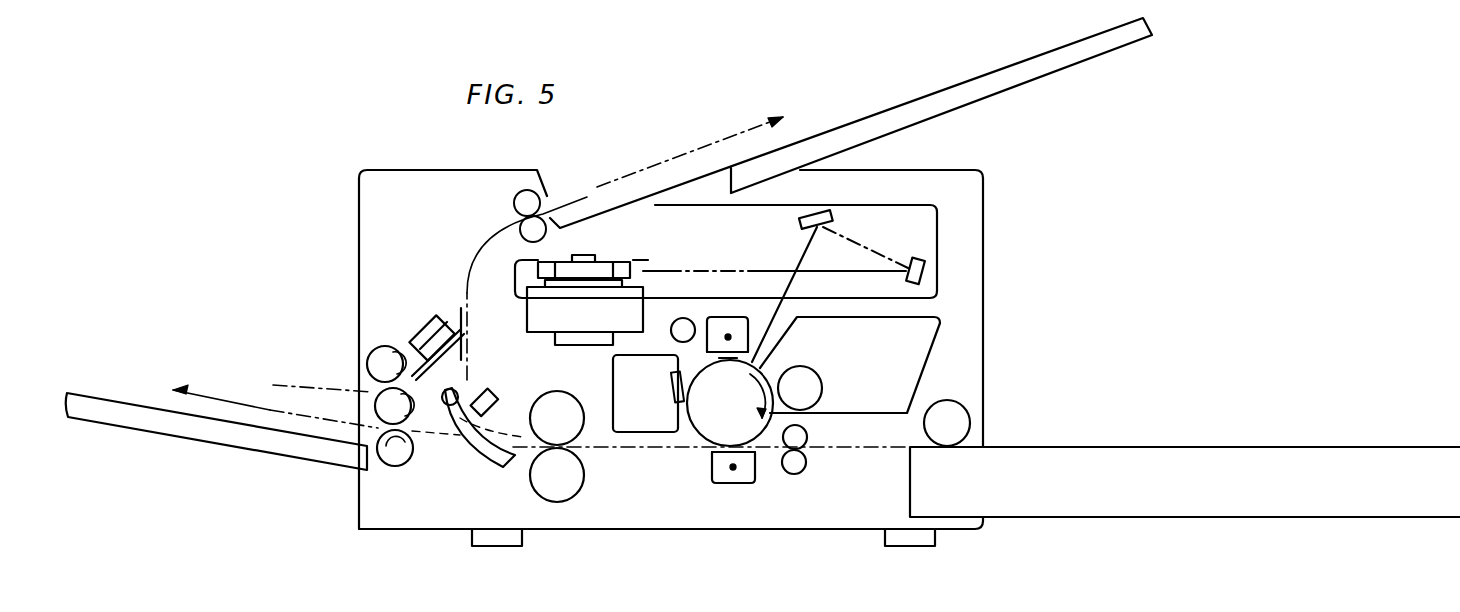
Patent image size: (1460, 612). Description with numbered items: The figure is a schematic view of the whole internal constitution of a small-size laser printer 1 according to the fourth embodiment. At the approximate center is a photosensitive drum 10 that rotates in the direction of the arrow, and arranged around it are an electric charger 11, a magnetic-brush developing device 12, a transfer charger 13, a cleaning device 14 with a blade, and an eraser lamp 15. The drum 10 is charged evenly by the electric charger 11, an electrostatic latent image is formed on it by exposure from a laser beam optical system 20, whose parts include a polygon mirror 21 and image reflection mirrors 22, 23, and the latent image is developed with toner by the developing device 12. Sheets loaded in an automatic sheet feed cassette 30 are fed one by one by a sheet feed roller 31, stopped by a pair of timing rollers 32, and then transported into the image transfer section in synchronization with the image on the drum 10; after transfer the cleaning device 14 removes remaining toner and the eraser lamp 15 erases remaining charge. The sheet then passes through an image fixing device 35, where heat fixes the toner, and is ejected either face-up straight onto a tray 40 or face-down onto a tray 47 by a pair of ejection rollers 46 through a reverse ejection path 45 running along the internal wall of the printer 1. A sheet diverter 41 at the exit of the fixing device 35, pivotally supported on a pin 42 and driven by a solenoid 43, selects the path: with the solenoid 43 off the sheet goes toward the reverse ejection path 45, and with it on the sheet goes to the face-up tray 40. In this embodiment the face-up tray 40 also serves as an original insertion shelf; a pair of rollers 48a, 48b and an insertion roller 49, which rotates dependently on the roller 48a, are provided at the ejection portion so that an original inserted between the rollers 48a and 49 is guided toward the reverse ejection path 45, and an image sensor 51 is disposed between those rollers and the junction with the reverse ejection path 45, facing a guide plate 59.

The printer 1 is at (998, 307).
The photosensitive drum 10 is at (693, 442).
The electric charger 11 is at (728, 333).
The developing device 12 is at (928, 340).
The transfer charger 13 is at (732, 483).
The cleaning device 14 is at (637, 423).
The eraser lamp 15 is at (685, 318).
The laser beam optical system 20 is at (926, 229).
The polygon mirror 21 is at (600, 268).
The image reflection mirror 22 is at (927, 270).
The image reflection mirror 23 is at (830, 215).
The automatic sheet feed cassette 30 is at (1077, 519).
The sheet feed roller 31 is at (960, 423).
The timing rollers 32 is at (806, 466).
The image fixing device 35 is at (578, 392).
The tray 40 is at (230, 448).
The sheet diverter 41 is at (495, 463).
The pin 42 is at (443, 402).
The solenoid 43 is at (481, 391).
The reverse ejection path 45 is at (466, 334).
The ejection rollers 46 is at (513, 196).
The tray 47 is at (890, 108).
The roller 48a is at (380, 405).
The roller 48b is at (397, 467).
The insertion roller 49 is at (368, 350).
The image sensor 51 is at (427, 317).
The guide plate 59 is at (463, 333).